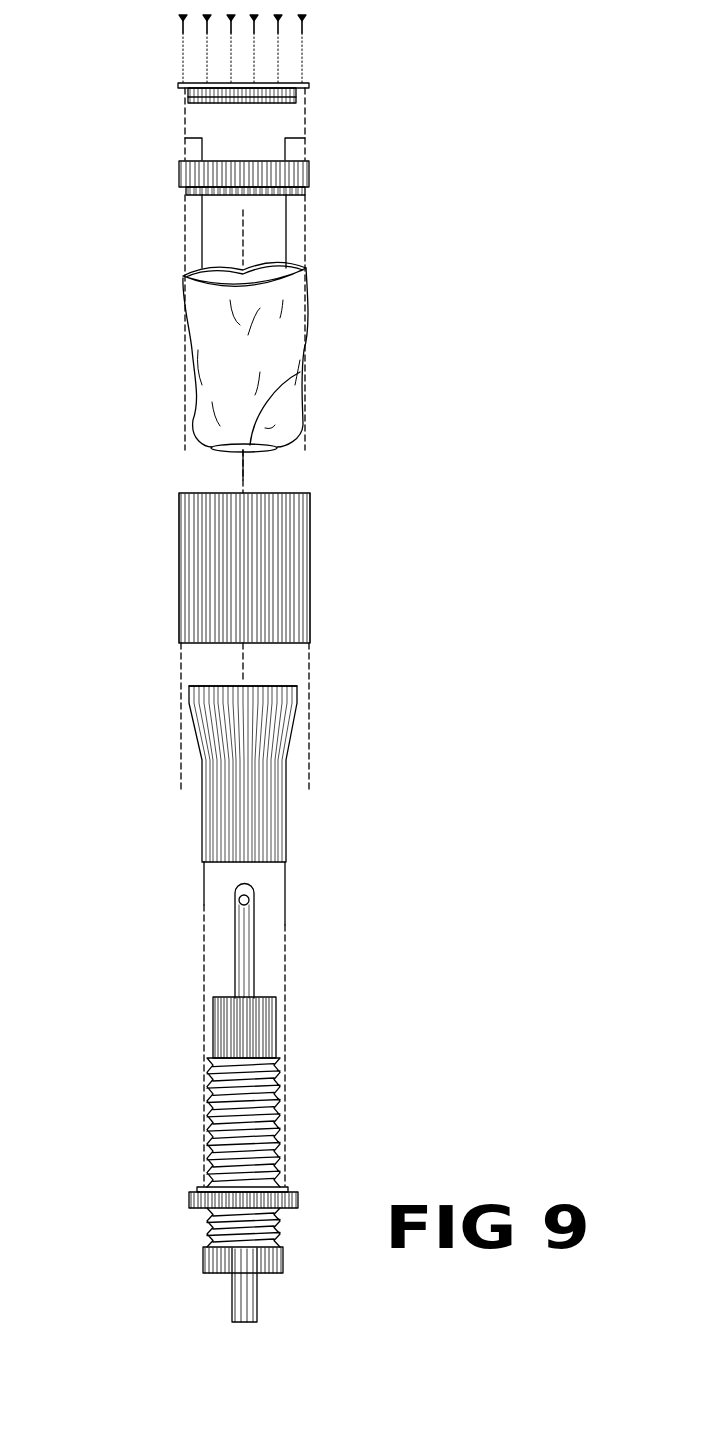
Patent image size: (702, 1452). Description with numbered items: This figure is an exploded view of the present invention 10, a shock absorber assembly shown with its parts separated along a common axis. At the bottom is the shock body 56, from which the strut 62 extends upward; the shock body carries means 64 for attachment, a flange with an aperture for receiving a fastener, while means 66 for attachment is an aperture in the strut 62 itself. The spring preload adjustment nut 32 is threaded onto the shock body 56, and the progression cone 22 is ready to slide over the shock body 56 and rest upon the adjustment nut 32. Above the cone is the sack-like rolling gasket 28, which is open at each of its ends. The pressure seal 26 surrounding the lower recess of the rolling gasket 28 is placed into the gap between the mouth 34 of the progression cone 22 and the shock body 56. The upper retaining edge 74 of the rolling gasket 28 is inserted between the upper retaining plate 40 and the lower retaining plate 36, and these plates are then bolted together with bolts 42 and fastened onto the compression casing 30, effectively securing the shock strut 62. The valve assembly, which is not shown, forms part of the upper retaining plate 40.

The present invention 10 is at (467, 112).
The progression cone 22 is at (264, 733).
The pressure seal 26 is at (300, 372).
The rolling gasket 28 is at (306, 322).
The compression casing 30 is at (310, 553).
The spring preload adjustment nut 32 is at (189, 1206).
The mouth 34 is at (295, 681).
The lower retaining plate 36 is at (309, 165).
The upper retaining plate 40 is at (309, 83).
The bolts 42 is at (305, 24).
The shock body 56 is at (277, 1015).
The strut 62 is at (257, 935).
The means for attachment 64 is at (232, 1290).
The means for attachment 66 is at (250, 897).
The upper retaining edge 74 is at (282, 261).